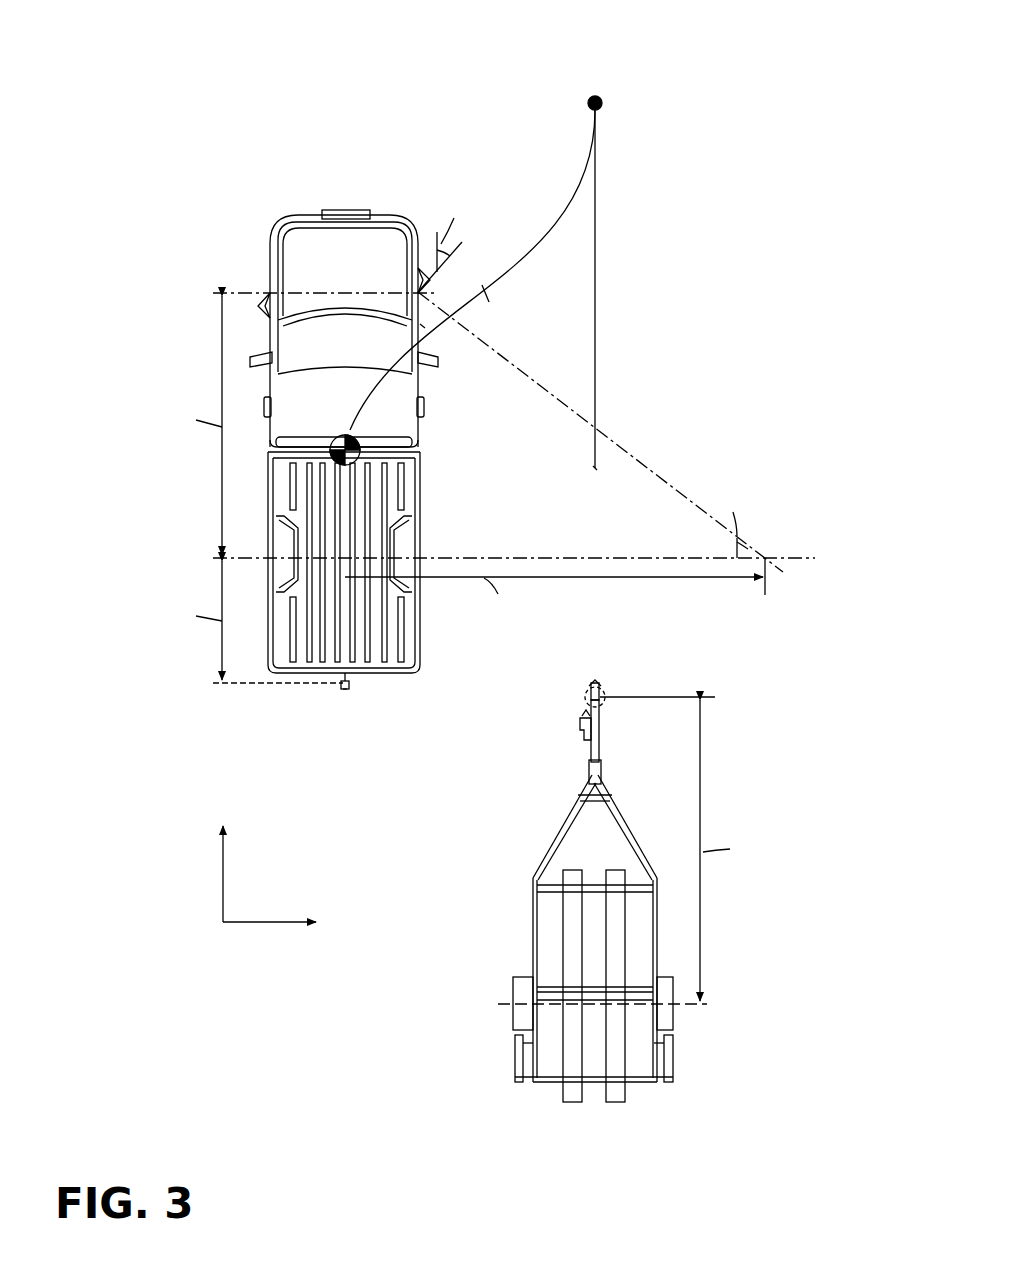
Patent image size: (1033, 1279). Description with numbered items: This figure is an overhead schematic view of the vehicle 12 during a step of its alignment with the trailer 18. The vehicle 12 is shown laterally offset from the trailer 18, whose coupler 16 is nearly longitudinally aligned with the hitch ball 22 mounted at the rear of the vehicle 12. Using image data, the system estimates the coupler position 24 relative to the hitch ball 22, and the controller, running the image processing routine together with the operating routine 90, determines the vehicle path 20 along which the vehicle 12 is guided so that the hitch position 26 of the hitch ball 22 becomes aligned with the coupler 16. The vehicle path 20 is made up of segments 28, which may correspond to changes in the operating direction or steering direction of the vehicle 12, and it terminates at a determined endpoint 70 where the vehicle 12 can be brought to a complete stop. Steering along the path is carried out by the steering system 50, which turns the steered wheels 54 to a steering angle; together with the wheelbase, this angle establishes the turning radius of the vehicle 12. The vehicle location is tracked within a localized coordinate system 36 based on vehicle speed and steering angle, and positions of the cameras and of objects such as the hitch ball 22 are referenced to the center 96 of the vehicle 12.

The vehicle 12 is at (246, 216).
The coupler 16 is at (606, 701).
The trailer 18 is at (531, 921).
The vehicle path 20 is at (676, 54).
The hitch ball 22 is at (339, 687).
The coupler position 24 is at (606, 684).
The hitch position 26 is at (350, 690).
The segments 28 is at (546, 264).
The localized coordinate system 36 is at (270, 930).
The steering system 50 is at (438, 326).
The steered wheels 54 is at (262, 298).
The endpoint 70 is at (591, 470).
The operating routine 90 is at (591, 99).
The center 96 is at (334, 460).